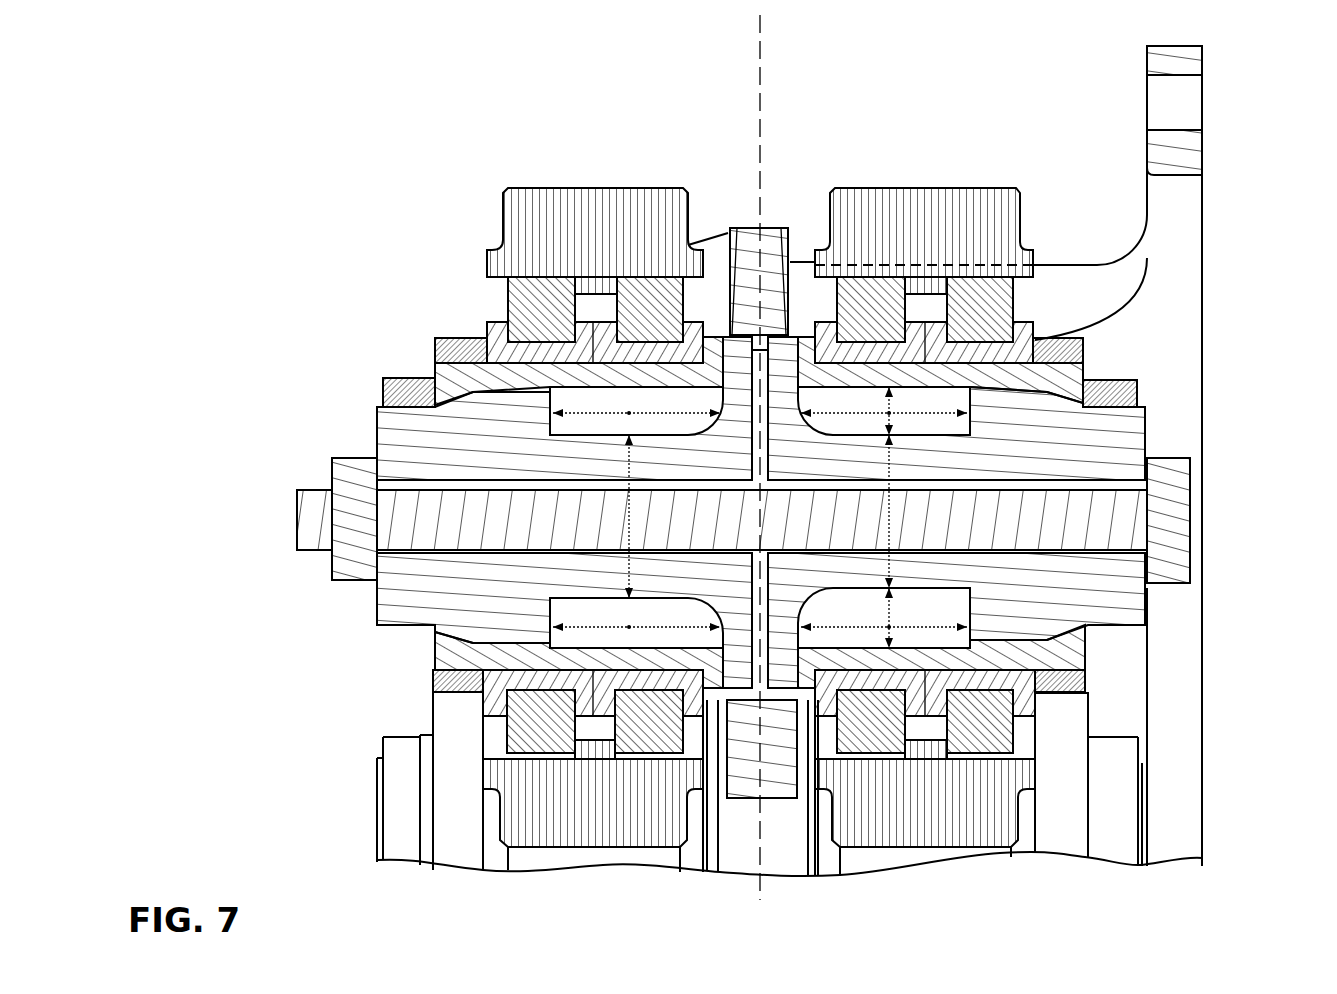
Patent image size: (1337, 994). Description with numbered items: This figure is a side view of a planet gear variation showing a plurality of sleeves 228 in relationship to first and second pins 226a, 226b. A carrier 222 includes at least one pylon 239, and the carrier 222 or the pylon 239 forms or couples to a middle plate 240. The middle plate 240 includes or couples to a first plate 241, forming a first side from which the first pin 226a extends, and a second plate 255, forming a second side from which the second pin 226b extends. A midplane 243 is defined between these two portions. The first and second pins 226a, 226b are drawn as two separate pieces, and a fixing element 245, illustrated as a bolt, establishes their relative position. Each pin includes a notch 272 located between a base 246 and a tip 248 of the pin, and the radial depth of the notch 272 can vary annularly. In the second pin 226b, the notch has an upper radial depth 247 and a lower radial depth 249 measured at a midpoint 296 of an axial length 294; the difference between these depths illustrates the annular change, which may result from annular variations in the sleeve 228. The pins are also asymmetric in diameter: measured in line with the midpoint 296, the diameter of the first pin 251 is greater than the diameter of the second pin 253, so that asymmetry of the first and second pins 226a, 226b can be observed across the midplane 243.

The carrier 222 is at (1210, 140).
The first pin 226a is at (370, 412).
The second pin 226b is at (1155, 410).
The sleeve 228 is at (1092, 370).
The pylon 239 is at (800, 266).
The middle plate 240 is at (771, 222).
The first plate 241 is at (733, 300).
The midplane 243 is at (748, 93).
The fixing element 245 is at (1192, 516).
The base 246 is at (756, 800).
The upper radial depth 247 is at (888, 402).
The tip 248 is at (375, 446).
The lower radial depth 249 is at (885, 632).
The diameter of the first pin 251 is at (625, 538).
The diameter of the second pin 253 is at (893, 521).
The second plate 255 is at (798, 258).
The notch 272 is at (630, 522).
The axial length 294 is at (573, 412).
The midpoint 296 is at (628, 412).